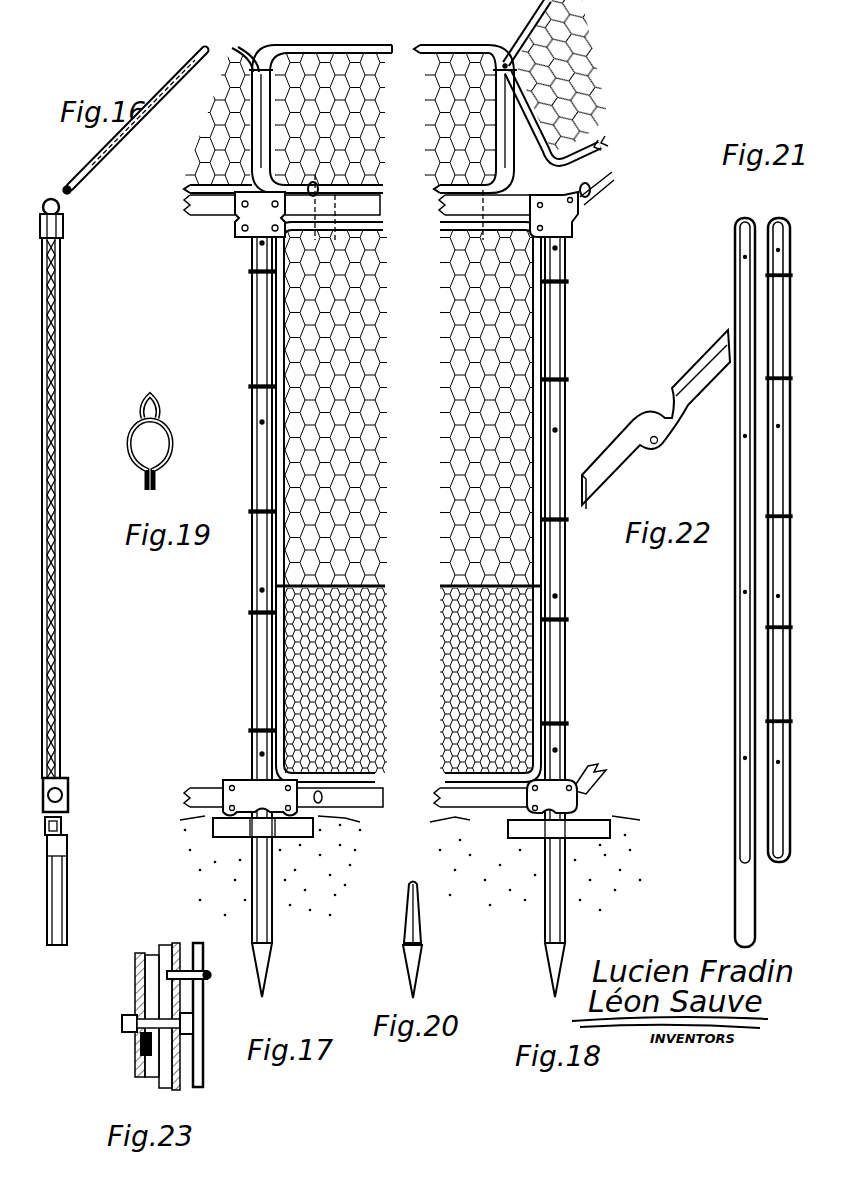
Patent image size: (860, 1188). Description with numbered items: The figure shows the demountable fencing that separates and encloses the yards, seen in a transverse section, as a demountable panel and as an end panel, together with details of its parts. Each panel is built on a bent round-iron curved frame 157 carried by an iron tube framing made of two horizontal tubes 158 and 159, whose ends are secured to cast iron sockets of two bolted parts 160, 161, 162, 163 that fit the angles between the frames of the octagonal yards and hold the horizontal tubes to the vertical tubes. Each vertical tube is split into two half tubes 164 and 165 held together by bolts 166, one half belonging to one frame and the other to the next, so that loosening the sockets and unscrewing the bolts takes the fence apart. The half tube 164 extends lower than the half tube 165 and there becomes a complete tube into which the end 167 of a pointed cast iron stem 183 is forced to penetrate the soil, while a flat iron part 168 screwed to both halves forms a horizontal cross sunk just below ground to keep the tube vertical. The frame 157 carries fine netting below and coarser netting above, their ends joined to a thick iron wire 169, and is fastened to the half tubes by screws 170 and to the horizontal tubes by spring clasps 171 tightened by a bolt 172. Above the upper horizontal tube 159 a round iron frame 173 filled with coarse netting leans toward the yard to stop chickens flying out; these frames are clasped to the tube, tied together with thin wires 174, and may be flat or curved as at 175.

In FIG. 17, the curved frame 157 is at (281, 637).
In FIG. 18, the curved frame 157 is at (523, 502).
In FIG. 23, the curved frame 157 is at (200, 1001).
In FIG. 17, the horizontal tube 158 is at (283, 501).
In FIG. 18, the horizontal tube 158 is at (482, 501).
In FIG. 16, the horizontal tube 158 is at (68, 786).
In FIG. 17, the upper horizontal tube 159 is at (346, 207).
In FIG. 18, the upper horizontal tube 159 is at (540, 202).
In FIG. 16, the upper horizontal tube 159 is at (60, 208).
In FIG. 17, the socket part 160 is at (260, 798).
In FIG. 16, the socket part 160 is at (68, 800).
In FIG. 17, the socket part 161 is at (260, 214).
In FIG. 16, the socket part 161 is at (62, 229).
In FIG. 18, the socket part 162 is at (553, 796).
In FIG. 18, the socket part 163 is at (554, 214).
In FIG. 17, the half tube 164 is at (254, 660).
In FIG. 18, the half tube 164 is at (556, 699).
In FIG. 16, the half tube 164 is at (56, 886).
In FIG. 21, the half tube 164 is at (742, 684).
In FIG. 17, the half tube 165 is at (262, 682).
In FIG. 18, the half tube 165 is at (562, 676).
In FIG. 16, the half tube 165 is at (58, 847).
In FIG. 21, the half tube 165 is at (782, 653).
In FIG. 23, the half tube 165 is at (190, 1040).
In FIG. 17, the bolt 166 is at (258, 244).
In FIG. 18, the bolt 166 is at (566, 248).
In FIG. 21, the bolt 166 is at (746, 257).
In FIG. 23, the bolt 166 is at (136, 1036).
In FIG. 20, the stem end 167 is at (416, 920).
In FIG. 17, the flat iron part 168 is at (233, 840).
In FIG. 18, the flat iron part 168 is at (608, 832).
In FIG. 16, the flat iron part 168 is at (62, 827).
In FIG. 22, the flat iron part 168 is at (656, 419).
In FIG. 23, the flat iron part 168 is at (150, 1050).
In FIG. 18, the thick iron wire 169 is at (556, 567).
In FIG. 16, the thick iron wire 169 is at (60, 583).
In FIG. 17, the screw 170 is at (262, 272).
In FIG. 18, the screw 170 is at (560, 282).
In FIG. 21, the screw 170 is at (779, 276).
In FIG. 23, the screw 170 is at (208, 976).
In FIG. 17, the spring clasp 171 is at (319, 181).
In FIG. 18, the spring clasp 171 is at (590, 186).
In FIG. 19, the spring clasp 171 is at (169, 433).
In FIG. 19, the bolt 172 is at (135, 480).
In FIG. 17, the round iron frame 173 is at (387, 45).
In FIG. 18, the round iron frame 173 is at (514, 102).
In FIG. 16, the round iron frame 173 is at (118, 146).
In FIG. 17, the thin wire 174 is at (257, 66).
In FIG. 18, the thin wire 174 is at (500, 66).
In FIG. 16, the curved frame shape 175 is at (90, 147).
In FIG. 17, the cast iron stem 183 is at (263, 961).
In FIG. 18, the cast iron stem 183 is at (558, 952).
In FIG. 20, the cast iron stem 183 is at (418, 964).